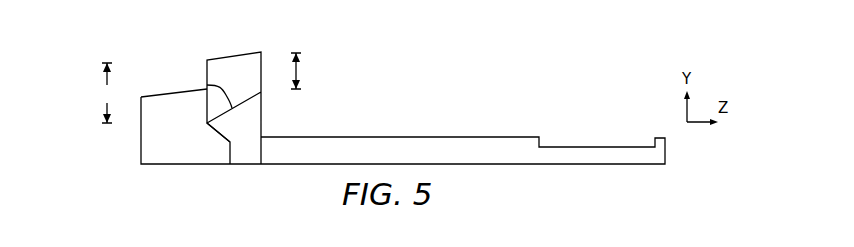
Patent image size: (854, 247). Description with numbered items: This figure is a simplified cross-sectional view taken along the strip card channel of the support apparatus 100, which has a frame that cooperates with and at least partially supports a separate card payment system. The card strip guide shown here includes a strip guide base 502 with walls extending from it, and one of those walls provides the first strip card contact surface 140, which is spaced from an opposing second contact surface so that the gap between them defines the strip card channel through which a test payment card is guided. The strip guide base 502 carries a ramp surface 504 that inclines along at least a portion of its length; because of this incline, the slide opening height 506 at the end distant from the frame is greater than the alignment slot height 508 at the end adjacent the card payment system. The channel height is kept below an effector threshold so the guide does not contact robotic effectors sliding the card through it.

The support apparatus 100 is at (413, 66).
The first strip card contact surface 140 is at (245, 68).
The strip guide base 502 is at (225, 128).
The ramp surface 504 is at (207, 85).
The slide opening height 506 is at (107, 93).
The alignment slot height 508 is at (313, 71).